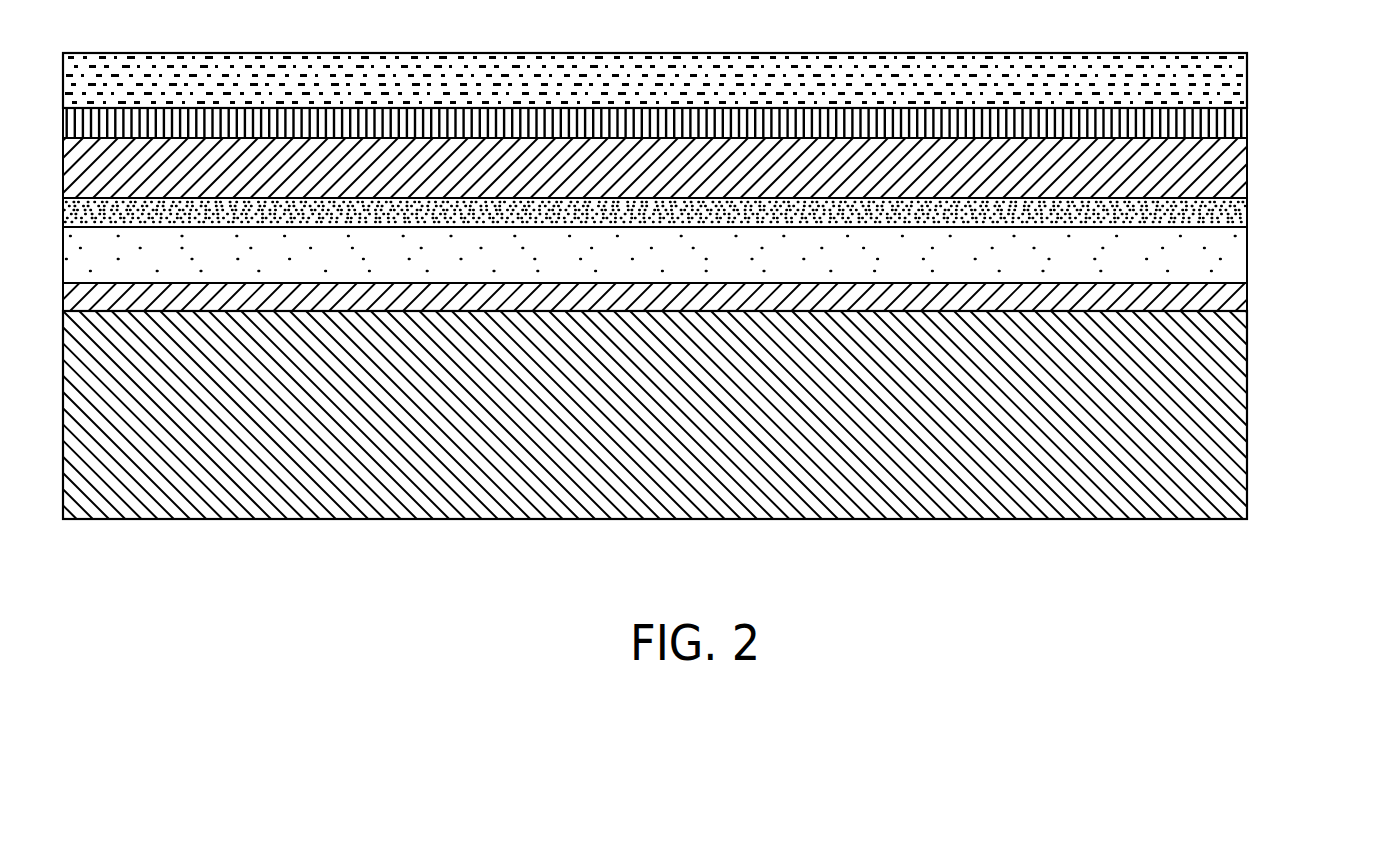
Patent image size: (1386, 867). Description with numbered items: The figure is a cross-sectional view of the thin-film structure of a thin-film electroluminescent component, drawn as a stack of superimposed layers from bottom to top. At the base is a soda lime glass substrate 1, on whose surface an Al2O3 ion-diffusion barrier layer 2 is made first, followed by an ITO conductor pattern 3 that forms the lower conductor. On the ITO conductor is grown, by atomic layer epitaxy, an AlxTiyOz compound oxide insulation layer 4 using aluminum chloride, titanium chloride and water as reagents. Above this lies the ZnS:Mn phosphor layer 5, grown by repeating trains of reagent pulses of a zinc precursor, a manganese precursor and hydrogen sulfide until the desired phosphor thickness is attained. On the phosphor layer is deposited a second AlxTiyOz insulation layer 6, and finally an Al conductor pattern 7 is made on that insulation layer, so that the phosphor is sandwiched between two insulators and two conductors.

The soda lime glass substrate 1 is at (1243, 402).
The ion-diffusion barrier layer 2 is at (1247, 297).
The ITO conductor pattern 3 is at (1247, 253).
The compound oxide insulation layer 4 is at (1247, 212).
The phosphor layer 5 is at (1247, 168).
The insulation layer 6 is at (1247, 119).
The Al conductor pattern 7 is at (1240, 82).